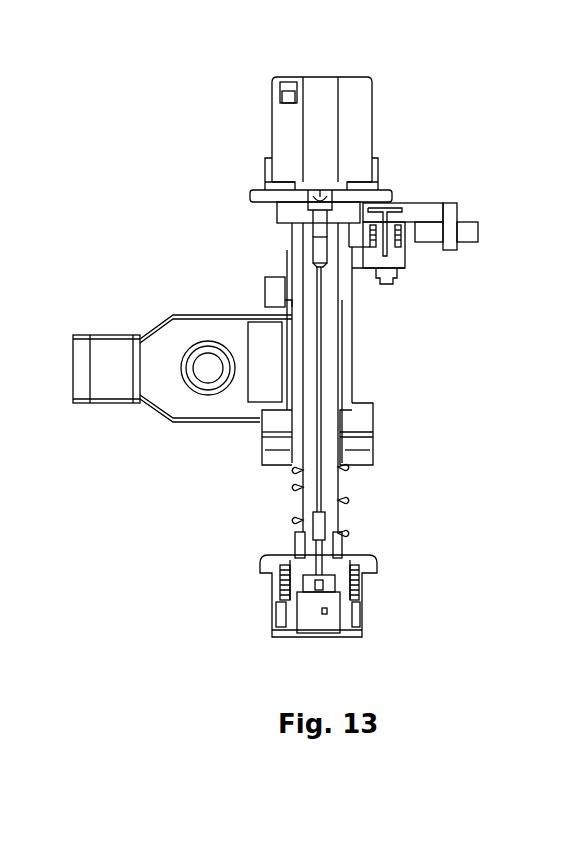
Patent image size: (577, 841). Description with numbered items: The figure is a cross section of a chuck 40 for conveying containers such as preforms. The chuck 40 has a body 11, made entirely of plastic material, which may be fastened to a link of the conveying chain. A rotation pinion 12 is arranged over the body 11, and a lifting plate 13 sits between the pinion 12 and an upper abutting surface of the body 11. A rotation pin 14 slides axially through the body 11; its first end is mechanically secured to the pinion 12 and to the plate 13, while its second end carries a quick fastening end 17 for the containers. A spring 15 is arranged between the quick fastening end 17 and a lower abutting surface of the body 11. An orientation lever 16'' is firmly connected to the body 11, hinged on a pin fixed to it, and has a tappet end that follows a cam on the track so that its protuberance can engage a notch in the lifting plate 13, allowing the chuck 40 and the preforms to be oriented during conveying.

The chuck 40 is at (454, 64).
The rotation pinion 12 is at (347, 152).
The lifting plate 13 is at (288, 202).
The rotation pin 14 is at (327, 376).
The body 11 is at (180, 340).
The orientation lever 16'' is at (454, 220).
The spring 15 is at (343, 503).
The quick fastening end 17 is at (272, 585).